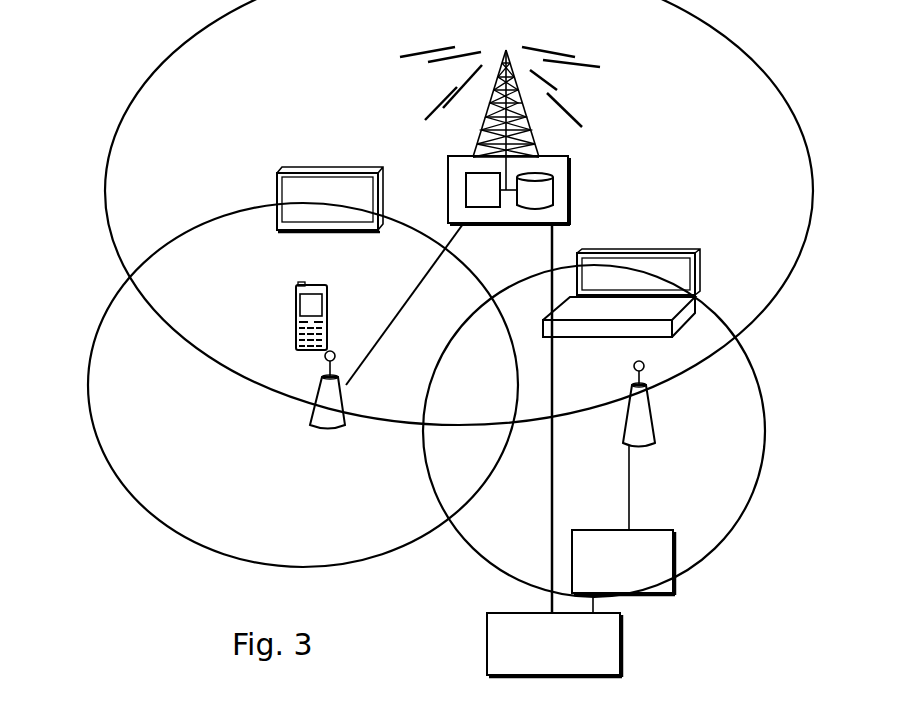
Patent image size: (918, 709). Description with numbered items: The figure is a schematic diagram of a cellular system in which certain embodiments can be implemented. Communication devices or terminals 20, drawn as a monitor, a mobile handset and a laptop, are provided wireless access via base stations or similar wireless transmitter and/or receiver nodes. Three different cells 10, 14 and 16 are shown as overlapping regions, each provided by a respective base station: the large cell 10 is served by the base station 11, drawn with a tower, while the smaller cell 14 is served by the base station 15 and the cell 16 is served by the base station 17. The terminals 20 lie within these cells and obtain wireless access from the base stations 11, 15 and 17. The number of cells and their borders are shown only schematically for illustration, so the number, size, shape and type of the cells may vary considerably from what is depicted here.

The cell 10 is at (138, 82).
The base station 11 is at (448, 173).
The cell 14 is at (199, 553).
The base station 15 is at (322, 417).
The cell 16 is at (462, 548).
The base station 17 is at (640, 425).
The communication devices or terminals 20 is at (281, 172).